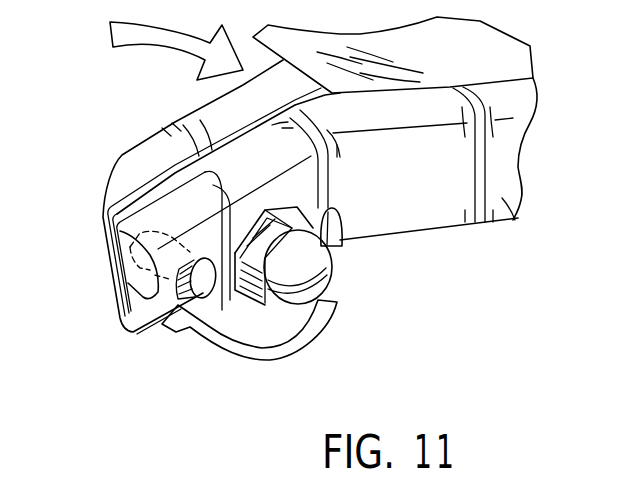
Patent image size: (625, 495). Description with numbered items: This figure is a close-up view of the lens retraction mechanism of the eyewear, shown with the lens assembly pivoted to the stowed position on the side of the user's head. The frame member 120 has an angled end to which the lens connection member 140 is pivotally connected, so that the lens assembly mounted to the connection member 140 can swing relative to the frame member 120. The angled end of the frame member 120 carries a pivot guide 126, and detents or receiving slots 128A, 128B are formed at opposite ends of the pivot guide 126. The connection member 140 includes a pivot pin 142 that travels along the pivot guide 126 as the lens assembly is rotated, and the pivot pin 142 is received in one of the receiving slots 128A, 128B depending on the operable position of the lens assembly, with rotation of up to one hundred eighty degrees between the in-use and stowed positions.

The frame member 120 is at (513, 220).
The lens connection member 140 is at (135, 162).
The pivot guide 126 is at (240, 308).
The receiving slot 128A is at (342, 238).
The receiving slot 128B is at (173, 290).
The pivot pin 142 is at (185, 318).